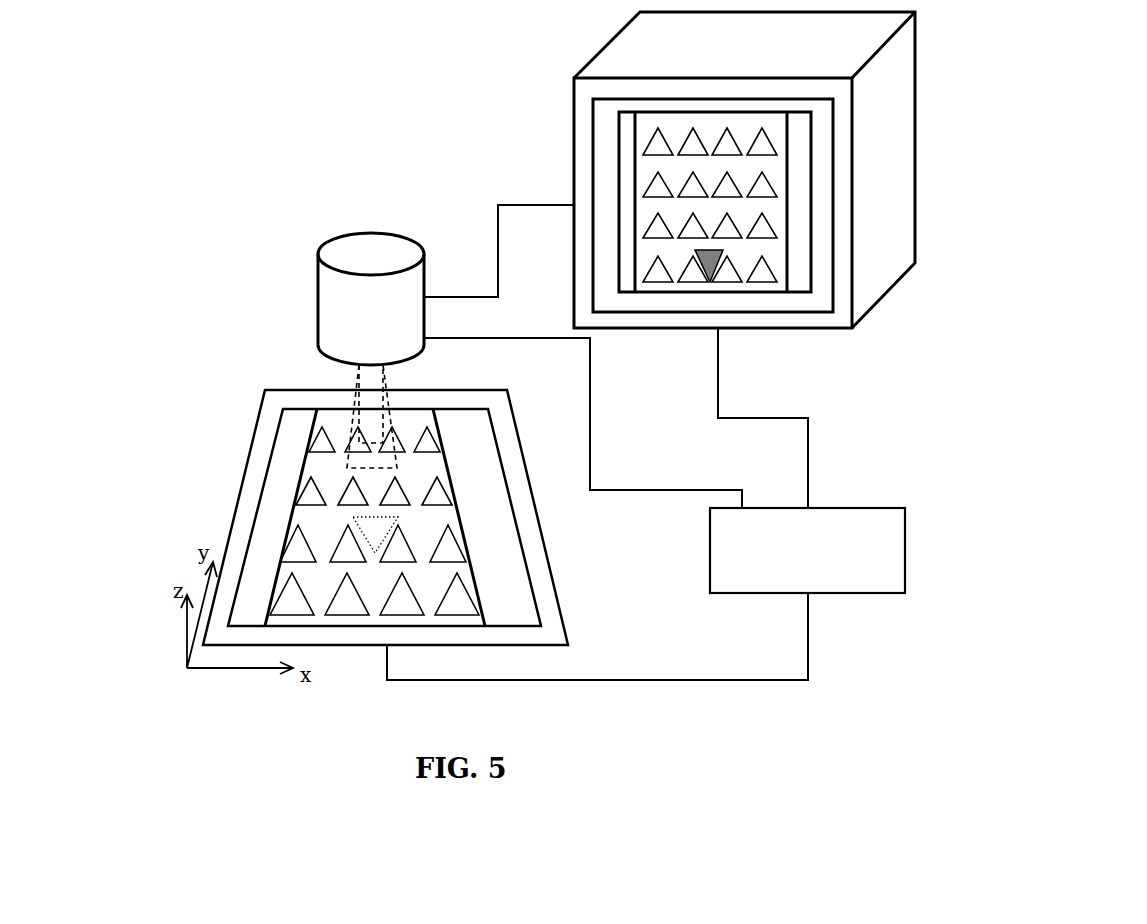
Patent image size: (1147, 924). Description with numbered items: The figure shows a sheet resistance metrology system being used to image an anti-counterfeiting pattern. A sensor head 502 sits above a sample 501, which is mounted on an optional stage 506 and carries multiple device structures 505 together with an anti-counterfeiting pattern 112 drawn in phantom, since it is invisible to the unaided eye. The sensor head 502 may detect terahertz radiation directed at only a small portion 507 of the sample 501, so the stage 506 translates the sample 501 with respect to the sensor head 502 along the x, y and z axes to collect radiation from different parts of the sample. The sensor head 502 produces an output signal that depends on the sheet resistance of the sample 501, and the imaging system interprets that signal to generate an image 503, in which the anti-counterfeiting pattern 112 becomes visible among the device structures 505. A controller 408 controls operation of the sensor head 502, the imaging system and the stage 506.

The image 503 is at (617, 163).
The sensor head 502 is at (333, 292).
The small portion 507 is at (348, 460).
The sample 501 is at (528, 560).
The stage 506 is at (565, 622).
The device structures 505 is at (355, 612).
The anti-counterfeiting pattern 112 is at (708, 282).
The controller 408 is at (807, 550).